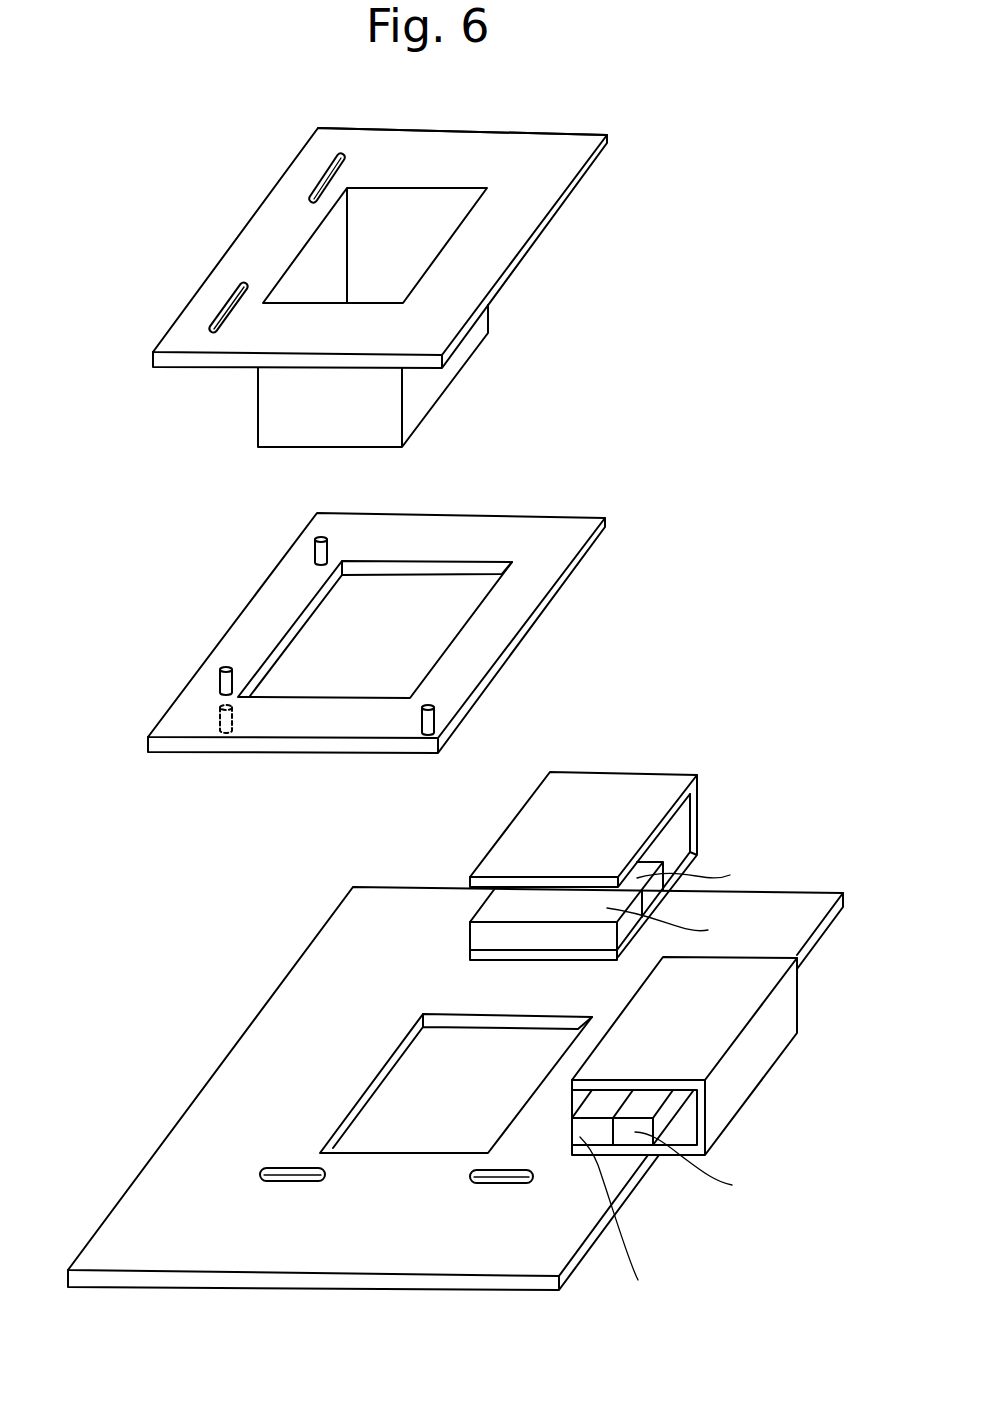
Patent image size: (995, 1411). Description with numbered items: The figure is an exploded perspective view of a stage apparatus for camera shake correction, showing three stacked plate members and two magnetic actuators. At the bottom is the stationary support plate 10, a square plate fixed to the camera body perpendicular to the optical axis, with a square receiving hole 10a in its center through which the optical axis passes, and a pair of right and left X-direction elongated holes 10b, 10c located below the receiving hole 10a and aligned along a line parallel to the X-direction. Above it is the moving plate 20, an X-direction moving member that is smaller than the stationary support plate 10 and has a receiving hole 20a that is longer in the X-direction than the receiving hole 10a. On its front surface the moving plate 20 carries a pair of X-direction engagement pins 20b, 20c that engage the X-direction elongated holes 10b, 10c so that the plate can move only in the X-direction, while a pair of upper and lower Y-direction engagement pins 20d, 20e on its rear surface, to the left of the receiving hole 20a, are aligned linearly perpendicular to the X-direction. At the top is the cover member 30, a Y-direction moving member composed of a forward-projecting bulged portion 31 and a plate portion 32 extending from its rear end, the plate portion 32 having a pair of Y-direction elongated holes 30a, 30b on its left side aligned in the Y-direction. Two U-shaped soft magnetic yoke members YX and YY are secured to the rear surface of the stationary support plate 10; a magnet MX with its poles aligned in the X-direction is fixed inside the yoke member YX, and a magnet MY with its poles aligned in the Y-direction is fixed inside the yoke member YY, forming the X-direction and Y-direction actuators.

The stationary support plate 10 is at (319, 977).
The receiving hole 10a is at (400, 1050).
The X-direction elongated hole 10b is at (290, 1177).
The X-direction elongated hole 10c is at (503, 1179).
The moving plate 20 is at (507, 615).
The receiving hole 20a is at (383, 570).
The X-direction engagement pin 20b is at (232, 713).
The X-direction engagement pin 20c is at (420, 716).
The Y-direction engagement pin 20d is at (313, 553).
The Y-direction engagement pin 20e is at (220, 687).
The cover member 30 is at (500, 238).
The Y-direction elongated hole 30a is at (320, 190).
The Y-direction elongated hole 30b is at (220, 318).
The bulged portion 31 is at (465, 365).
The plate portion 32 is at (535, 167).
The yoke member YY is at (693, 815).
The magnet MY is at (488, 915).
The yoke member YX is at (747, 1065).
The magnet MX is at (593, 1128).